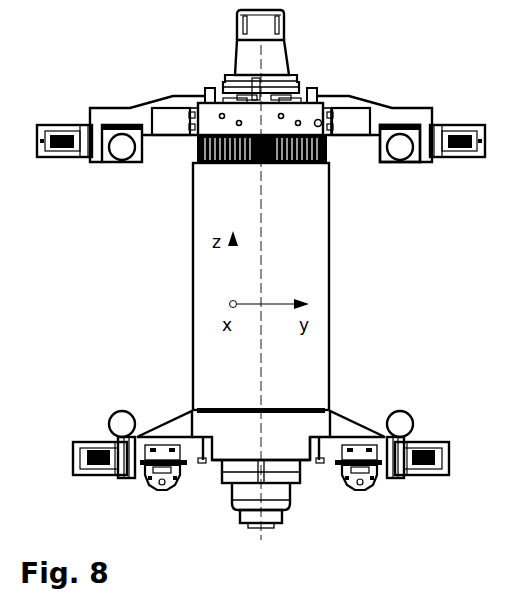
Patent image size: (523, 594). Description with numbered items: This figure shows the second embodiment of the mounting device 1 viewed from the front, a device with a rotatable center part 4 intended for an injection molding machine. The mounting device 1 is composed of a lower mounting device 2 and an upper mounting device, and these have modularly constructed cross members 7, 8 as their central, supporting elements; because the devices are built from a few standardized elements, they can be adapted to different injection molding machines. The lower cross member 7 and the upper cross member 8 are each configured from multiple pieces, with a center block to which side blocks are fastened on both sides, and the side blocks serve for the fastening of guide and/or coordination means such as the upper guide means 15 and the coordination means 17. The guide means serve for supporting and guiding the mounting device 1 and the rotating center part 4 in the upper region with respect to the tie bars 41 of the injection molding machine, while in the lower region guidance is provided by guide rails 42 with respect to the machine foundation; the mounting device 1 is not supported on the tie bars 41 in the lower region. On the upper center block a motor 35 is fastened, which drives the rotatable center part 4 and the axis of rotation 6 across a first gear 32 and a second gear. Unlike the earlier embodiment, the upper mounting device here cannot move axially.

The mounting device 1 is at (110, 47).
The lower mounting device 2 is at (117, 80).
The rotatable center part 4 is at (180, 290).
The axis of rotation 6 is at (265, 347).
The lower cross member 7 is at (157, 407).
The upper cross member 8 is at (410, 90).
The upper guide means 15 is at (420, 152).
The coordination means 17 is at (457, 110).
The first gear 32 is at (328, 167).
The motor 35 is at (244, 52).
The tie bars 41 is at (126, 152).
The guide rails 42 is at (367, 488).